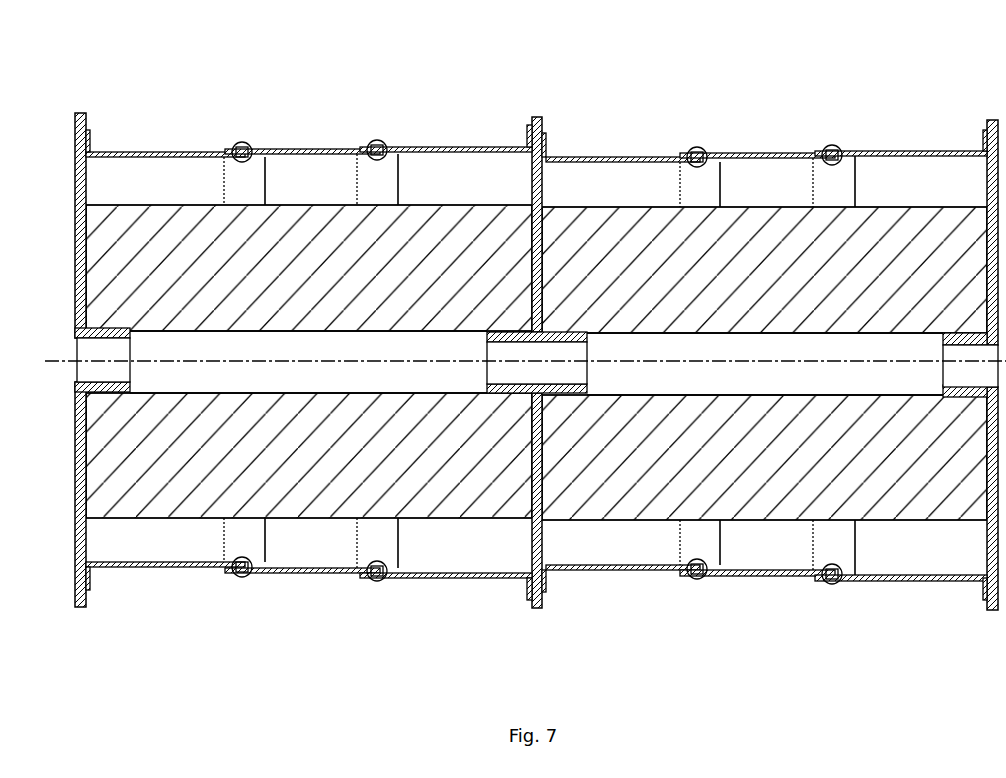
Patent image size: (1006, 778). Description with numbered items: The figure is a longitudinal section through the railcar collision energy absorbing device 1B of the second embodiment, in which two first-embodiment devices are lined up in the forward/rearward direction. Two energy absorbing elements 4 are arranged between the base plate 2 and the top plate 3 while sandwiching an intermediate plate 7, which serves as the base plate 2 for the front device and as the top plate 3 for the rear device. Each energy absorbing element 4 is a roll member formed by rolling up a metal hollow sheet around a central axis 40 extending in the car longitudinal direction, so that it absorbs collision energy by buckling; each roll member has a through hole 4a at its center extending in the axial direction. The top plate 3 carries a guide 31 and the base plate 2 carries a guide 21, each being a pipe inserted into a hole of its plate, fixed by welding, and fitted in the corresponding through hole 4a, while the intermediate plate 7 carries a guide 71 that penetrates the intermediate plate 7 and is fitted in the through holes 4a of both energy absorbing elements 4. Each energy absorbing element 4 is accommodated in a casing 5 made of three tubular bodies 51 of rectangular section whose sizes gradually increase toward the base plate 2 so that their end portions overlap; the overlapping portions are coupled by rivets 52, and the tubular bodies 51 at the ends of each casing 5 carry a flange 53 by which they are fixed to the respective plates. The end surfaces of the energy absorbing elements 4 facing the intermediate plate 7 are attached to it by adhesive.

The railcar collision energy absorbing device 1B is at (148, 126).
The base plate 2 is at (990, 612).
The top plate 3 is at (77, 610).
The energy absorbing element 4 is at (194, 473).
The through hole 4a is at (398, 394).
The casing 5 is at (536, 304).
The intermediate plate 7 is at (537, 610).
The guide 21 is at (955, 397).
The guide 31 is at (107, 392).
The central axis 40 is at (290, 362).
The tubular body 51 is at (177, 148).
The rivet 52 is at (243, 142).
The flange 53 is at (88, 140).
The guide 71 is at (563, 396).